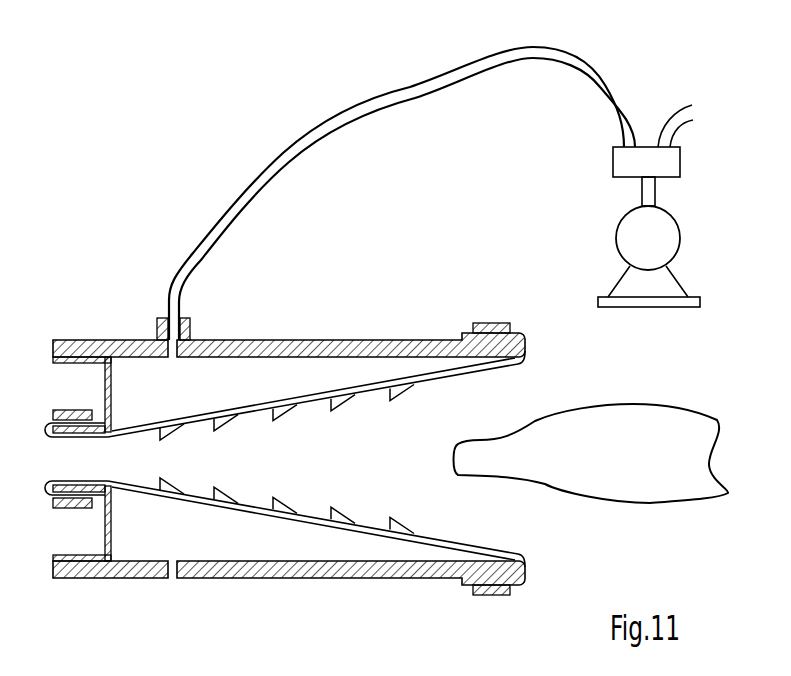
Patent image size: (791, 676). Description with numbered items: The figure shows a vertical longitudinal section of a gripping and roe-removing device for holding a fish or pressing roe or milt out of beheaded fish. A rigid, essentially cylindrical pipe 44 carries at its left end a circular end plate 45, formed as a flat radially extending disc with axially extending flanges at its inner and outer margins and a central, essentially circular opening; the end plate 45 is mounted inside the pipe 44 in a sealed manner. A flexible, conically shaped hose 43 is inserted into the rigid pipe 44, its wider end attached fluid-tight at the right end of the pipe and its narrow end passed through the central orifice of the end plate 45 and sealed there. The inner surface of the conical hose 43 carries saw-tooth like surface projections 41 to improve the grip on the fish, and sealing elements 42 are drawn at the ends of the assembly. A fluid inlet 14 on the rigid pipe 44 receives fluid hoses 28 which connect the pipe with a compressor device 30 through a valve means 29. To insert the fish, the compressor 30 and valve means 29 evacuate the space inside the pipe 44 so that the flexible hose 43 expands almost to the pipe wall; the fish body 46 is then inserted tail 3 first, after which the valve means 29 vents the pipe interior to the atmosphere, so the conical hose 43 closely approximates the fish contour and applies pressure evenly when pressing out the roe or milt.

The tail 3 is at (468, 462).
The fluid inlet 14 is at (191, 326).
The fluid hoses 28 is at (370, 118).
The valve means 29 is at (620, 163).
The compressor device 30 is at (660, 249).
The gripping teeth 41 is at (275, 414).
The sealing pads 42 is at (73, 410).
The flexible, conically shaped tube or hose 43 is at (315, 404).
The rigid, essentially cylindrical tube or pipe 44 is at (402, 340).
The circular end plate 45 is at (111, 396).
The shoe upper / workpiece body 46 is at (573, 453).